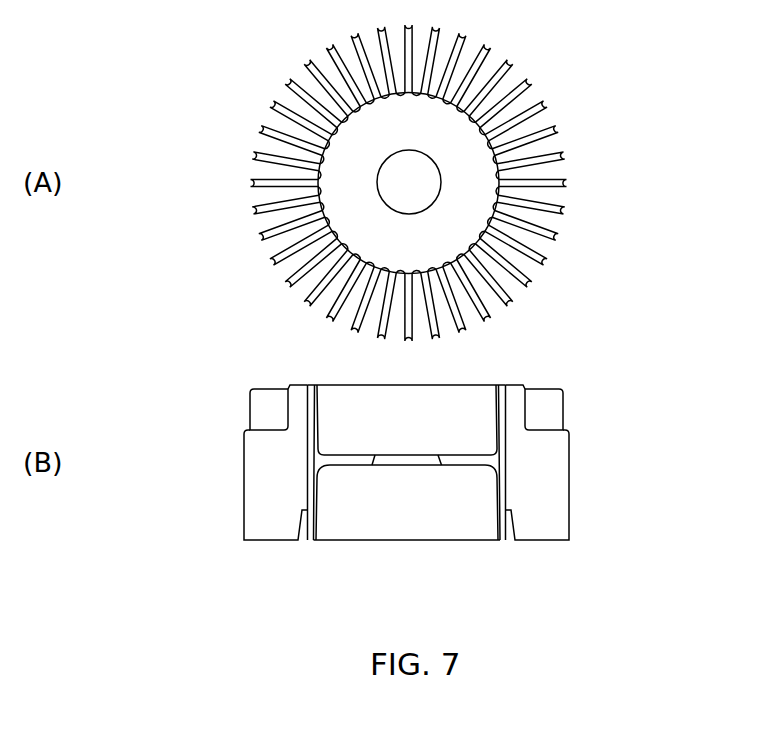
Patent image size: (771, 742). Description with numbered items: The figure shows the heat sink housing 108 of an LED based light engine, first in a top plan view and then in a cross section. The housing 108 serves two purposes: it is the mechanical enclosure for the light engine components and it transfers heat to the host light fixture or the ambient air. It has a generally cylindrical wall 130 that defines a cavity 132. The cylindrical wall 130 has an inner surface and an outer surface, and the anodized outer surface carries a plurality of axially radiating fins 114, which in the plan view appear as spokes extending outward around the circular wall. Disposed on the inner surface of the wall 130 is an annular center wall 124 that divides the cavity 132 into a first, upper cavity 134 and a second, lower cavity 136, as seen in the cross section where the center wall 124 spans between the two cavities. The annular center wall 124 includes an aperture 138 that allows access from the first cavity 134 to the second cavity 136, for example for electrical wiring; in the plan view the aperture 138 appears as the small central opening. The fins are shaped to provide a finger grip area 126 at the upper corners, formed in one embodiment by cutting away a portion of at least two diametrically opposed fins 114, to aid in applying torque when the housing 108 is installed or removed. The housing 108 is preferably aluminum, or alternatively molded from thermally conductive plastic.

In FIG. 7A, the heat sink housing 108 is at (644, 324).
In FIG. 7A, the axially radiating fins 114 is at (533, 82).
In FIG. 7B, the axially radiating fins 114 is at (552, 488).
In FIG. 7A, the annular center wall 124 is at (482, 206).
In FIG. 7B, the annular center wall 124 is at (343, 462).
In FIG. 7B, the finger grip area 126 is at (266, 409).
In FIG. 7A, the cylindrical wall 130 is at (392, 103).
In FIG. 7B, the cylindrical wall 130 is at (494, 514).
In FIG. 7B, the cavity 132 is at (392, 556).
In FIG. 7B, the first, upper cavity 134 is at (484, 434).
In FIG. 7B, the second, lower cavity 136 is at (484, 504).
In FIG. 7A, the aperture 138 is at (392, 208).
In FIG. 7B, the aperture 138 is at (401, 463).